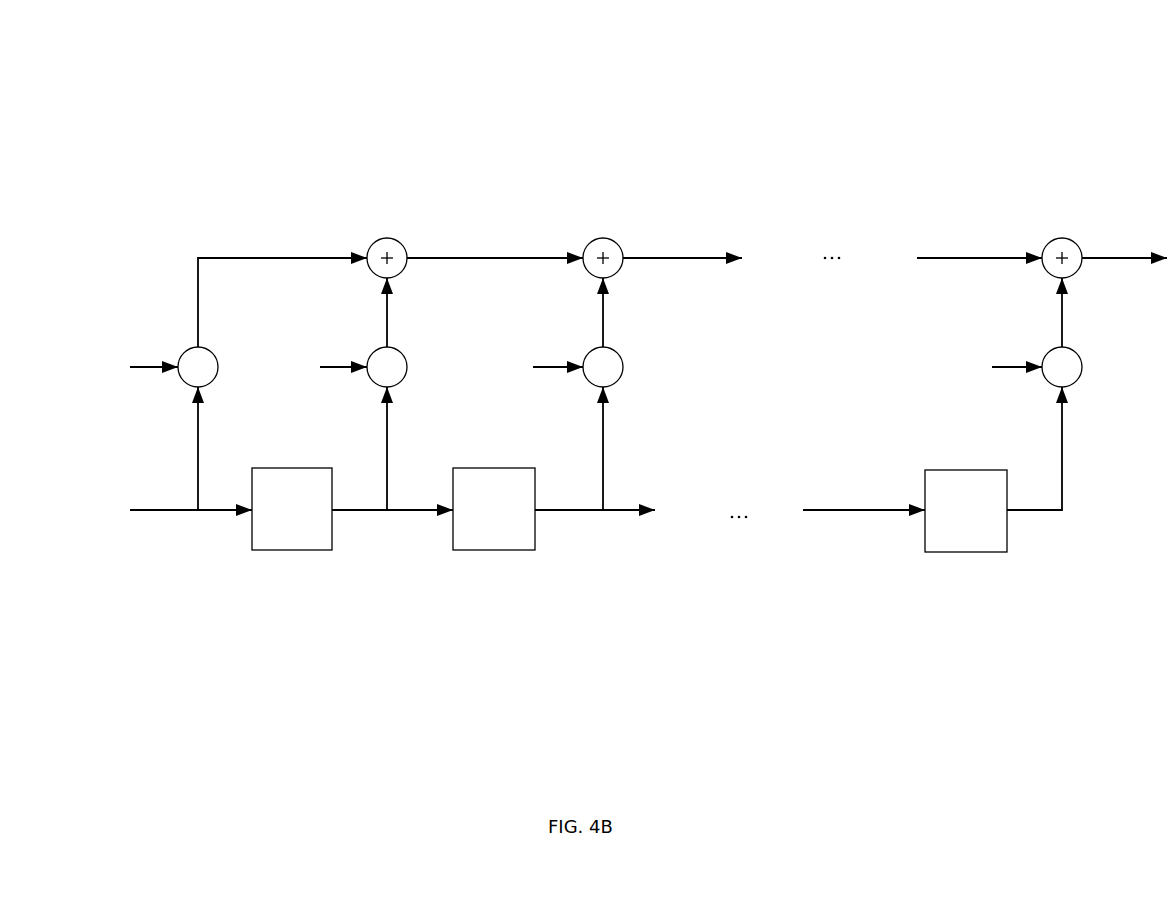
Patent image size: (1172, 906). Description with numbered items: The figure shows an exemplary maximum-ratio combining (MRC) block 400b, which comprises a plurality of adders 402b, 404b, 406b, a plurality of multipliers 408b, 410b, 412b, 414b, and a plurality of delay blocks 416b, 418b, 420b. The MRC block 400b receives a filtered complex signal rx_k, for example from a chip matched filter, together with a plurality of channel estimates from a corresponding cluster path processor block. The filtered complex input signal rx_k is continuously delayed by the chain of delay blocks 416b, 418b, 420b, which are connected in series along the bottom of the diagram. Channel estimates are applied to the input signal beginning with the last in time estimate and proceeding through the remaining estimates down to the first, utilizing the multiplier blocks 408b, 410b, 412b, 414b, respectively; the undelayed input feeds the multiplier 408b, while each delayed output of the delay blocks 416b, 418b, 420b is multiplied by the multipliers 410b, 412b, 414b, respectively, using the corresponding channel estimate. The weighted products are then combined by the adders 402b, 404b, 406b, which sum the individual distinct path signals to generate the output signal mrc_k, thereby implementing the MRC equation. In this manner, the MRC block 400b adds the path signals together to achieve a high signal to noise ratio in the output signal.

The maximum-ratio combining (MRC) block 400b is at (190, 110).
The adder 402b is at (373, 272).
The adder 404b is at (589, 272).
The adder 406b is at (1047, 272).
The multiplier 408b is at (186, 382).
The multiplier 410b is at (372, 382).
The multiplier 412b is at (589, 382).
The multiplier 414b is at (1047, 382).
The delay block 416b is at (278, 552).
The delay block 418b is at (468, 552).
The delay block 420b is at (942, 554).